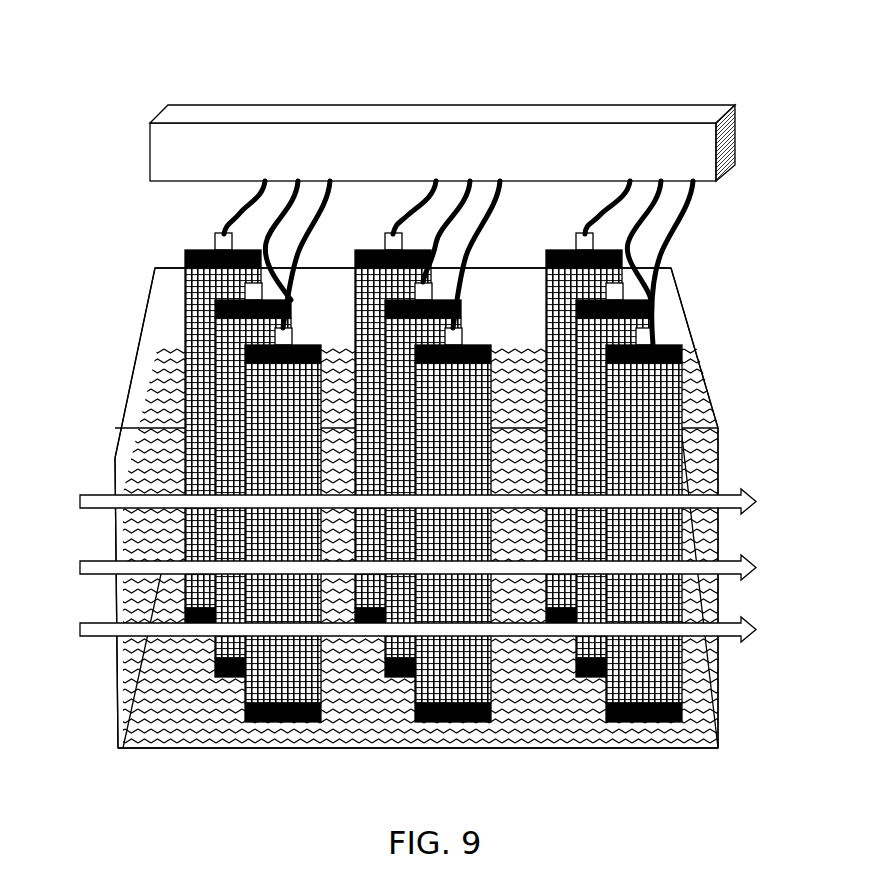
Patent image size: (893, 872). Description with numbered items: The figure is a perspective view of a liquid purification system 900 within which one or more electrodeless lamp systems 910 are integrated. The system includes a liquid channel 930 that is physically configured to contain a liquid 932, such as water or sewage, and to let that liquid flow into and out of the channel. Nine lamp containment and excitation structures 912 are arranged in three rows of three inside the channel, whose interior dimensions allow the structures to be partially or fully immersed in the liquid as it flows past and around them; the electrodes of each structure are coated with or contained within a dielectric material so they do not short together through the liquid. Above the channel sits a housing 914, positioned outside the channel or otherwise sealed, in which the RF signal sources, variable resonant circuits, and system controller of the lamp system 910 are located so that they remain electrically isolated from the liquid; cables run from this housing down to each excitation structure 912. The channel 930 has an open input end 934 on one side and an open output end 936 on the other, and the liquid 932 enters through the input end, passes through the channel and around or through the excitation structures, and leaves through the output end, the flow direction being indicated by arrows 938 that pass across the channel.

The liquid purification system 900 is at (121, 65).
The electrodeless lamp system 910 is at (706, 219).
The lamp containment and excitation structure 912 is at (192, 240).
The housing 914 is at (483, 105).
The liquid channel 930 is at (162, 258).
The liquid 932 is at (118, 440).
The input end 934 is at (122, 350).
The output end 936 is at (693, 393).
The arrows 938 is at (90, 480).